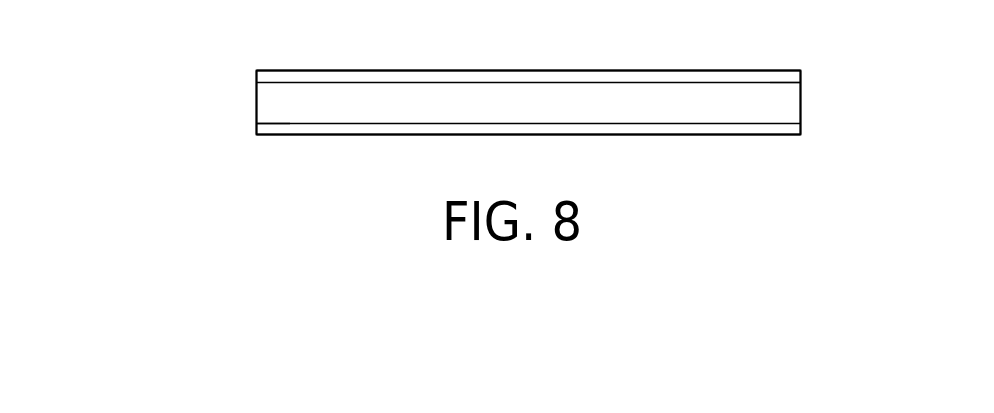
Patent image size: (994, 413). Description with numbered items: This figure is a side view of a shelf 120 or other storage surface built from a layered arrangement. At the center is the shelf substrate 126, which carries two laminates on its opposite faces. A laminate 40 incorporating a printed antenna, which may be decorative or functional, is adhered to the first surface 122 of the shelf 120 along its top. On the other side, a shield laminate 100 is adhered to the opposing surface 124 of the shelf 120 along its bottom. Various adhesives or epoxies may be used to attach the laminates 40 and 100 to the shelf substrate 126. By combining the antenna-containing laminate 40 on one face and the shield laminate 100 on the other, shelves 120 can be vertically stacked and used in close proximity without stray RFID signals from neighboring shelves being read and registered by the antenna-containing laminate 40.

The shelf 120 is at (150, 98).
The laminate 40 is at (561, 53).
The shield laminate 100 is at (536, 160).
The first surface 122 is at (772, 92).
The opposing surface 124 is at (273, 112).
The shelf substrate 126 is at (207, 78).